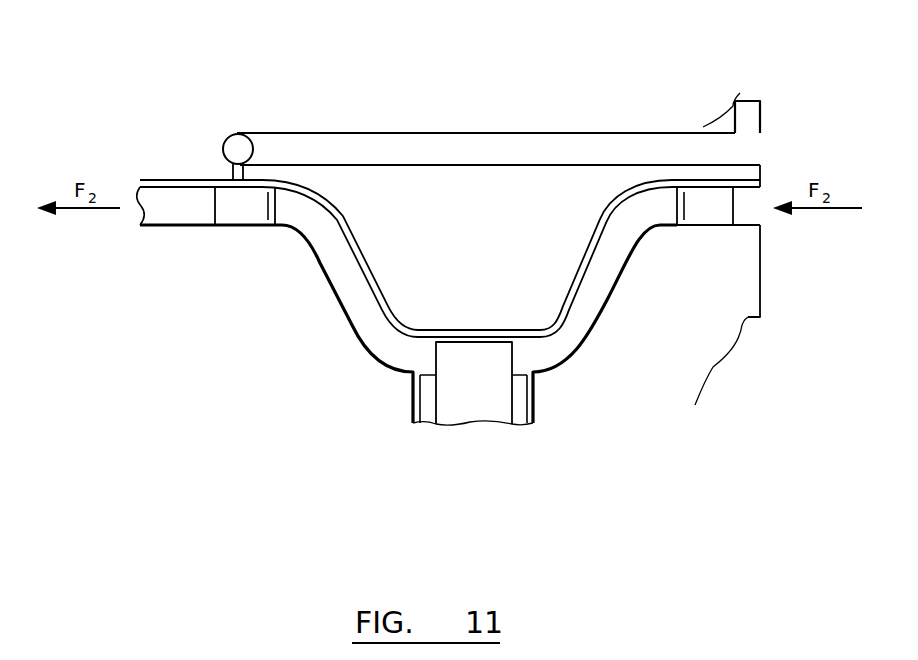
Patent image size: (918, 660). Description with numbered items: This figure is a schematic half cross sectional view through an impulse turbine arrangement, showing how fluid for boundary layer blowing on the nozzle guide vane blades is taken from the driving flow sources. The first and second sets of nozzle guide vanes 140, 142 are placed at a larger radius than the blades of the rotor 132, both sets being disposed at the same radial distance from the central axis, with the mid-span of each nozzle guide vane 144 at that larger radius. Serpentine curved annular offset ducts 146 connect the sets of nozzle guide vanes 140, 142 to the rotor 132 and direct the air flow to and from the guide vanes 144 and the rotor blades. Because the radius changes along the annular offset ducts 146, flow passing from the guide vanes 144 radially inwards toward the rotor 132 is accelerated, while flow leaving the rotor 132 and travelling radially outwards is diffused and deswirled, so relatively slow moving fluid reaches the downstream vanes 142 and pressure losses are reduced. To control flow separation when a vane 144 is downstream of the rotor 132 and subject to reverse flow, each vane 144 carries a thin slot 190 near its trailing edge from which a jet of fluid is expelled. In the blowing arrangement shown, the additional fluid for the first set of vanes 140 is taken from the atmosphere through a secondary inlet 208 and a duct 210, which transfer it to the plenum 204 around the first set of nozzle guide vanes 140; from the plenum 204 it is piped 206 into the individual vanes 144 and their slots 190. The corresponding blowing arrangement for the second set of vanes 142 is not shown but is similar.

The rotor 132 is at (478, 395).
The first set of nozzle guide vanes 140 is at (208, 233).
The second set of nozzle guide vanes 142 is at (673, 232).
The nozzle guide vane 144 is at (242, 210).
The annular offset duct 146 is at (352, 287).
The slot 190 is at (265, 210).
The plenum 204 is at (238, 148).
The pipe 206 is at (227, 172).
The secondary inlet 208 is at (763, 148).
The duct 210 is at (645, 148).